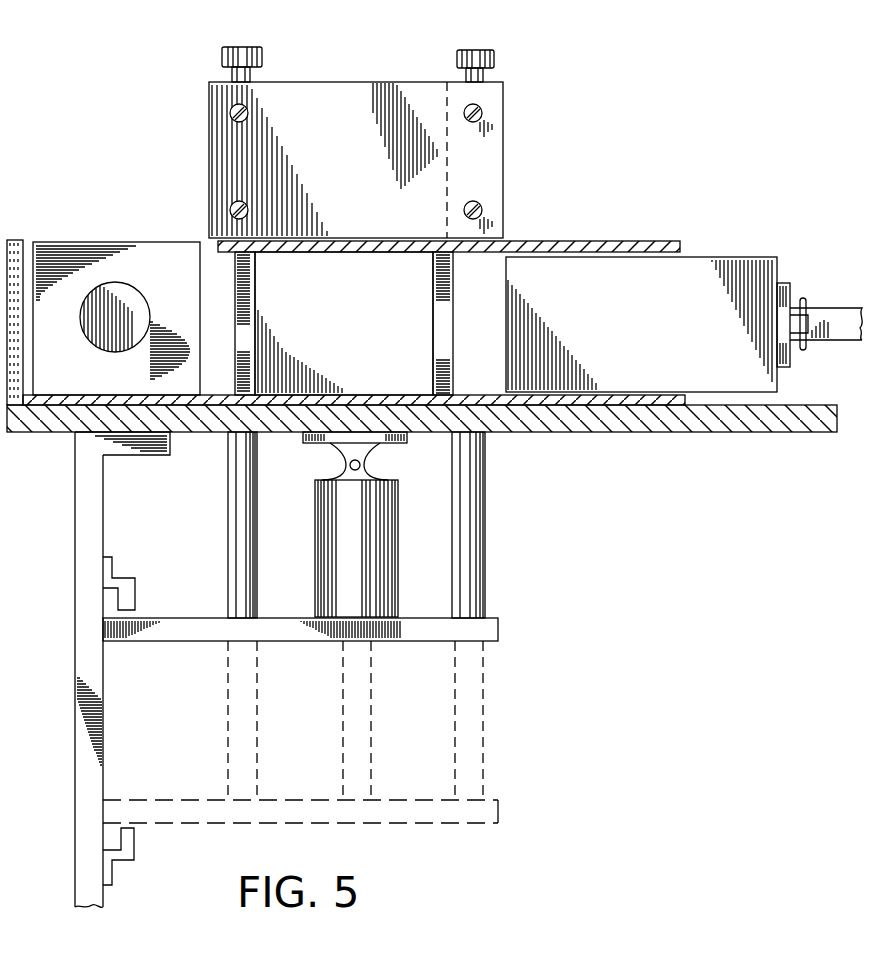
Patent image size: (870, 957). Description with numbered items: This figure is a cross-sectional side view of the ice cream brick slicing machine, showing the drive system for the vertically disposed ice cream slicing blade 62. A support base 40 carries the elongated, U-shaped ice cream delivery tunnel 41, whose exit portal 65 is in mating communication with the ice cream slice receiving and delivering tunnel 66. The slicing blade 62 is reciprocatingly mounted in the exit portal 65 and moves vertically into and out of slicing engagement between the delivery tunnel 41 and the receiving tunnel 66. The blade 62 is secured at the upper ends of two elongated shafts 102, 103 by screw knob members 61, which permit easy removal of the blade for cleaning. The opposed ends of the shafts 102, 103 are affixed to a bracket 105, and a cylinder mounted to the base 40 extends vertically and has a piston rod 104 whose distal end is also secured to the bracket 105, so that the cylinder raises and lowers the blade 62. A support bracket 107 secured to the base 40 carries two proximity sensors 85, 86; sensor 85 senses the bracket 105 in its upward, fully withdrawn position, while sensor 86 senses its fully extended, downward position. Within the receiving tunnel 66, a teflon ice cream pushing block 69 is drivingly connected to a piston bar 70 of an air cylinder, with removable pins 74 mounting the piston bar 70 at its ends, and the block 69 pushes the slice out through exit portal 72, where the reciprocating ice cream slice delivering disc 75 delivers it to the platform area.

The support base 40 is at (712, 433).
The ice cream delivery tunnel 41 is at (259, 300).
The knob members 61 is at (246, 47).
The ice cream slicing blade 62 is at (508, 143).
The exit portal 65 is at (352, 350).
The ice cream slice receiving and delivering tunnel 66 is at (556, 241).
The ice cream pushing block 69 is at (701, 257).
The piston bar 70 is at (828, 341).
The exit portal 72 is at (226, 288).
The removable pins 74 is at (805, 299).
The ice cream slice delivering disc 75 is at (123, 284).
The proximity sensor 85 is at (128, 578).
The proximity sensor 86 is at (135, 856).
The elongated shaft 102 is at (258, 489).
The elongated shaft 103 is at (486, 490).
The piston rod 104 is at (372, 738).
The bracket 105 is at (500, 631).
The support bracket 107 is at (105, 516).